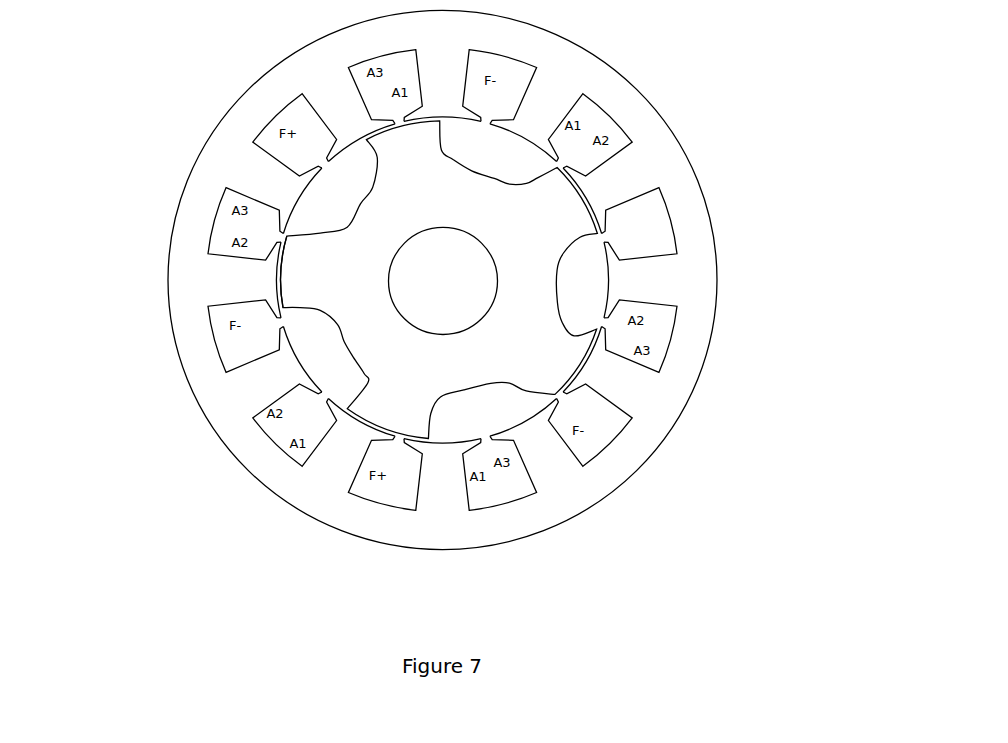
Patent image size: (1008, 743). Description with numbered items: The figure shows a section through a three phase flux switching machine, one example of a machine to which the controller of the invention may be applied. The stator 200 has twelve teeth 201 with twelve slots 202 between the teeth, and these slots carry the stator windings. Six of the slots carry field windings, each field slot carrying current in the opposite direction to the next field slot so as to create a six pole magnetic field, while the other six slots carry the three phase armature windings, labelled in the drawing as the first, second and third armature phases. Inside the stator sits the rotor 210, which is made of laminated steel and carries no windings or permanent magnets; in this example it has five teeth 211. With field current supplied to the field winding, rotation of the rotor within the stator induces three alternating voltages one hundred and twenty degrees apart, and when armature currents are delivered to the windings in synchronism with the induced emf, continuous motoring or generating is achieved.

The stator 200 is at (598, 72).
The teeth 201 is at (638, 175).
The slots 202 is at (665, 228).
The rotor 210 is at (384, 344).
The teeth 211 is at (309, 272).